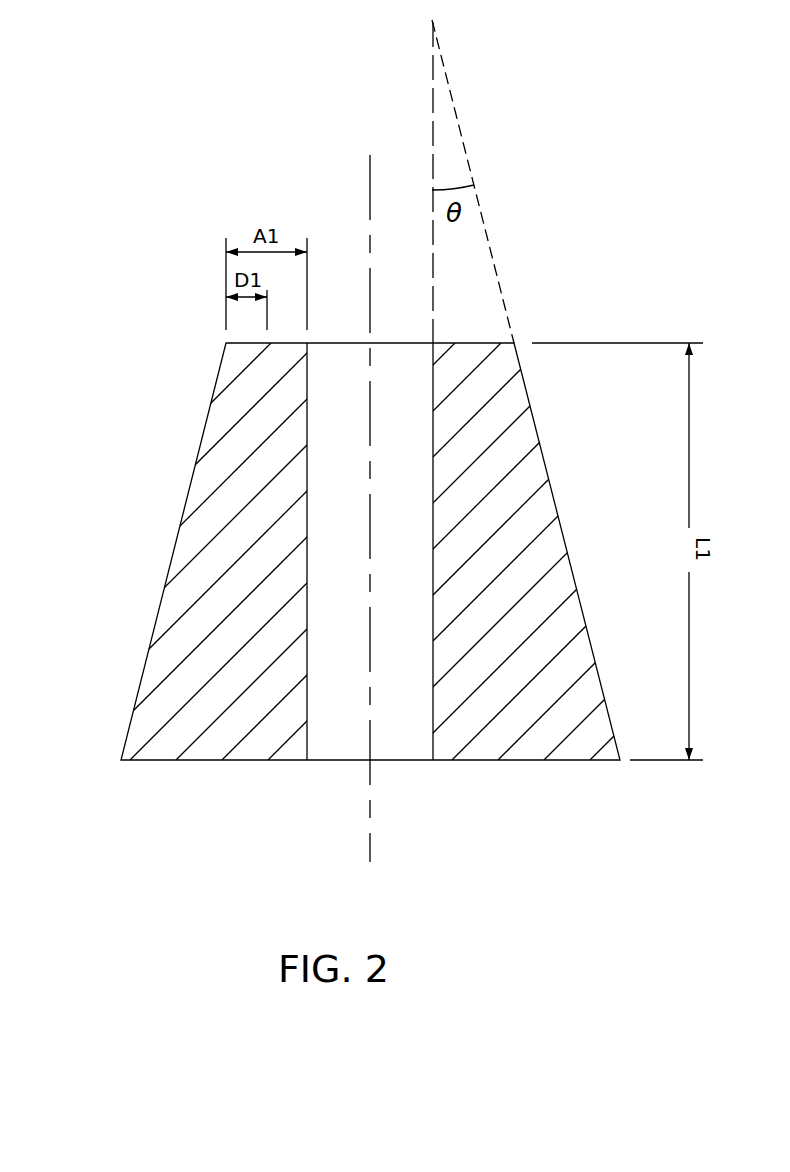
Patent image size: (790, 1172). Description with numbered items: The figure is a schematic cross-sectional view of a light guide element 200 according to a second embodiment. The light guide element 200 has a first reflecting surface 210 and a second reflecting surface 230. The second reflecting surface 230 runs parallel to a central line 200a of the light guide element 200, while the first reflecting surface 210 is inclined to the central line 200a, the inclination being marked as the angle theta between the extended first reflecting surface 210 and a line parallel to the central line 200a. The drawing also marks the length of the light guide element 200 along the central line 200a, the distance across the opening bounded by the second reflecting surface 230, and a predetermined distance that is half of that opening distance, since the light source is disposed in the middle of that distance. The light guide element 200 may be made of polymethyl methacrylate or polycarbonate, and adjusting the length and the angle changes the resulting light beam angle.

The light guide element 200 is at (395, 507).
The central line 200a is at (370, 183).
The first reflecting surface 210 is at (167, 577).
The second reflecting surface 230 is at (307, 428).